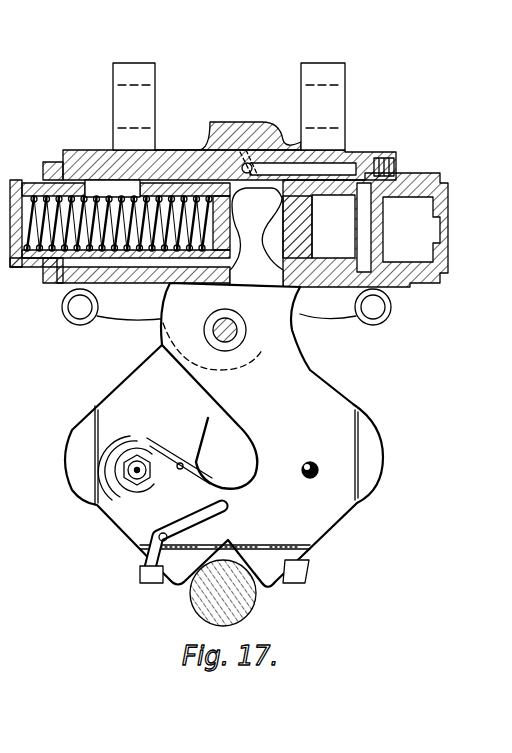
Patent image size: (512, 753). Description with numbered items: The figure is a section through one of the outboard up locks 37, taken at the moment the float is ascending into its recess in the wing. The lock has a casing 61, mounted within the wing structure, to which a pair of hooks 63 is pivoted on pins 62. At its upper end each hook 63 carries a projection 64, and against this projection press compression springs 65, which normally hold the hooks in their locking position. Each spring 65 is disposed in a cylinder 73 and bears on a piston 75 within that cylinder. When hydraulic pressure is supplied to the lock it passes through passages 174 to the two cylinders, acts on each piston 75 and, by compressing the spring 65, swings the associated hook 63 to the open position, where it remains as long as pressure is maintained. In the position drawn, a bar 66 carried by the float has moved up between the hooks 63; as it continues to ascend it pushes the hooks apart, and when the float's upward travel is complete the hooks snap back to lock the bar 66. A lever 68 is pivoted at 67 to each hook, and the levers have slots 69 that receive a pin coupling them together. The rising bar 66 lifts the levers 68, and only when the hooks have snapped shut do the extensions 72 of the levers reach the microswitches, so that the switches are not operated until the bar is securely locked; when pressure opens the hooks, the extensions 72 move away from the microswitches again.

The outboard up lock 37 is at (188, 120).
The casing 61 is at (101, 158).
The passages 174 is at (248, 160).
The projection 64 is at (256, 237).
The compression springs 65 is at (38, 253).
The pins 62 is at (240, 338).
The hooks 63 is at (70, 434).
The cylinder 73 is at (294, 265).
The piston 75 is at (331, 262).
The pivot 67 is at (142, 462).
The lever 68 is at (241, 482).
The slots 69 is at (152, 542).
The extensions 72 is at (142, 574).
The bar 66 is at (250, 602).